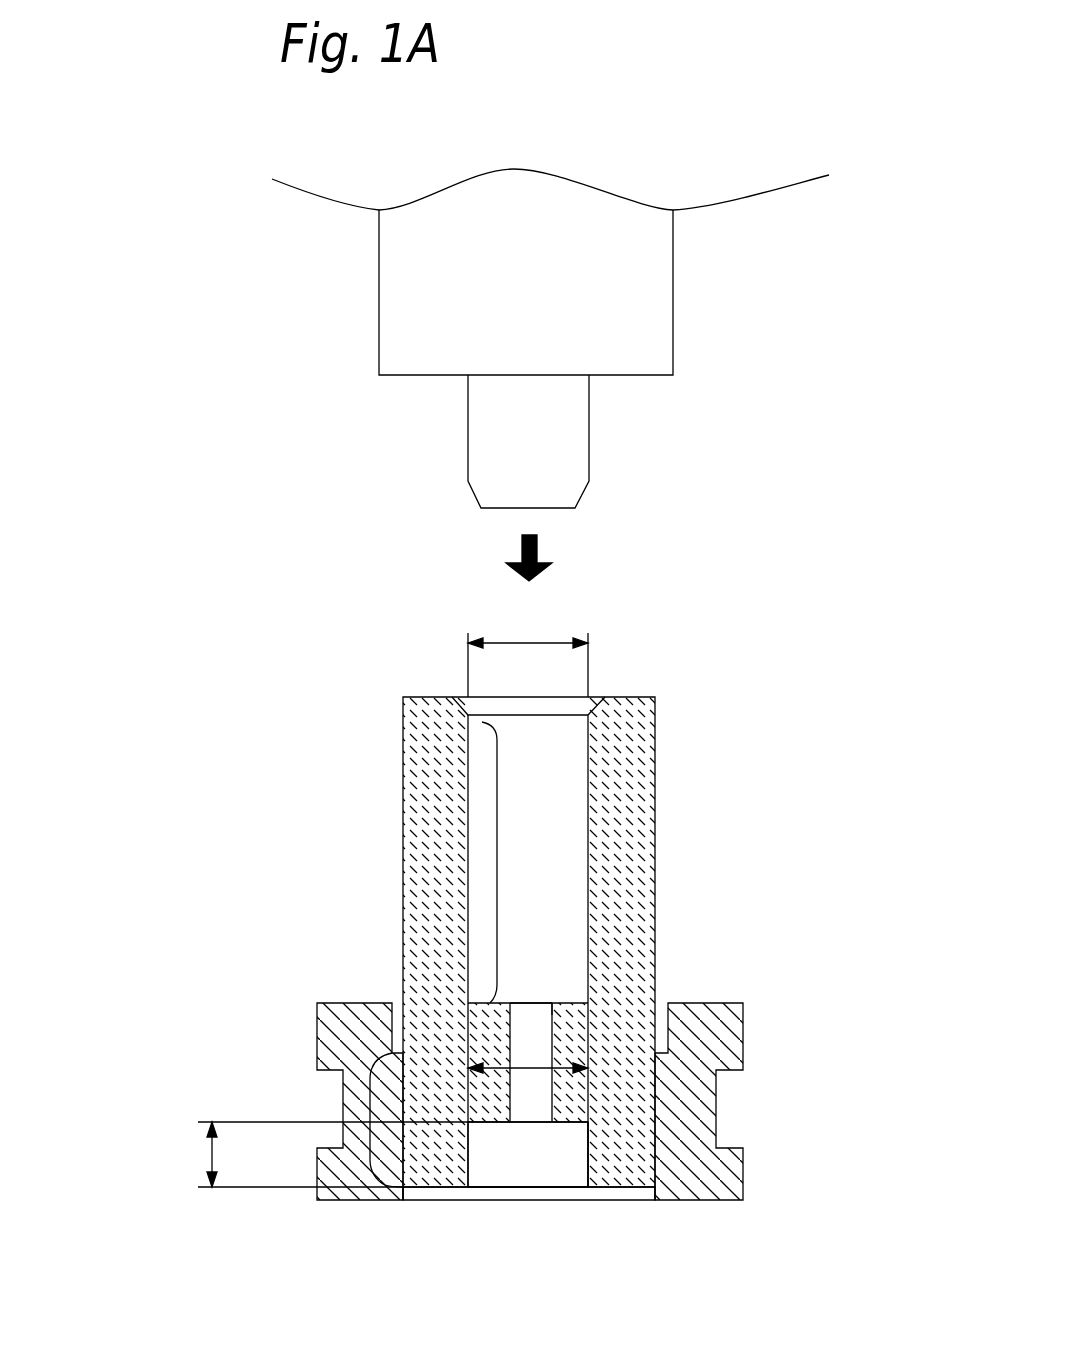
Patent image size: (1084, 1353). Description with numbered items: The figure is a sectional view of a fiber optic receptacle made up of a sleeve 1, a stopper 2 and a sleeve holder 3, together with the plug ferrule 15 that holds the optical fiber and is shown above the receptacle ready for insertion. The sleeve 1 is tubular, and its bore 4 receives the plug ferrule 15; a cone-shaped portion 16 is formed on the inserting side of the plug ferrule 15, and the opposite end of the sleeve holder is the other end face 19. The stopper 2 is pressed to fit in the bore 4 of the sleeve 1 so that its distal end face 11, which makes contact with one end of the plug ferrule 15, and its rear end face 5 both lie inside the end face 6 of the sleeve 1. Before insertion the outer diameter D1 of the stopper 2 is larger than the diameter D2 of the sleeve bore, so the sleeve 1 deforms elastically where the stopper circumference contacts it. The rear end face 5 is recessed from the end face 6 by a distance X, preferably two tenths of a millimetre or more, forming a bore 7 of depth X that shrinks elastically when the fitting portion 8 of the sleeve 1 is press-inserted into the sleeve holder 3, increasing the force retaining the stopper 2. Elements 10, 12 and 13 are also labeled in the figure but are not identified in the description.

The sleeve 1 is at (643, 793).
The stopper 2 is at (570, 1017).
The sleeve holder 3 is at (702, 1180).
The bore 4 is at (588, 885).
The rear end face 5 is at (497, 1122).
The end face 6 is at (623, 1190).
The bore 7 is at (588, 1148).
The fitting portion 8 is at (368, 1122).
The sleeve 10 is at (500, 862).
The distal end face 11 is at (528, 1003).
The orifice 12 is at (552, 1042).
The inlet edge 13 is at (552, 1003).
The plug ferrule 15 is at (495, 442).
The cone-shaped portion 16 is at (467, 695).
The other end face 19 is at (628, 693).
The outer diameter D1 is at (528, 1068).
The diameter of the bore D2 is at (528, 653).
The distance X is at (323, 1154).